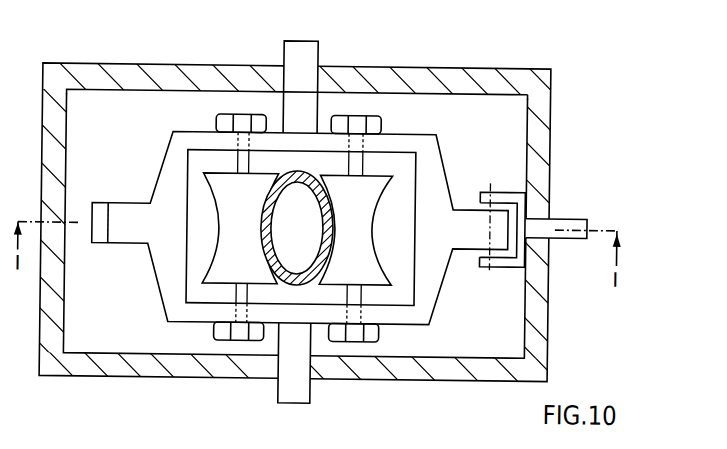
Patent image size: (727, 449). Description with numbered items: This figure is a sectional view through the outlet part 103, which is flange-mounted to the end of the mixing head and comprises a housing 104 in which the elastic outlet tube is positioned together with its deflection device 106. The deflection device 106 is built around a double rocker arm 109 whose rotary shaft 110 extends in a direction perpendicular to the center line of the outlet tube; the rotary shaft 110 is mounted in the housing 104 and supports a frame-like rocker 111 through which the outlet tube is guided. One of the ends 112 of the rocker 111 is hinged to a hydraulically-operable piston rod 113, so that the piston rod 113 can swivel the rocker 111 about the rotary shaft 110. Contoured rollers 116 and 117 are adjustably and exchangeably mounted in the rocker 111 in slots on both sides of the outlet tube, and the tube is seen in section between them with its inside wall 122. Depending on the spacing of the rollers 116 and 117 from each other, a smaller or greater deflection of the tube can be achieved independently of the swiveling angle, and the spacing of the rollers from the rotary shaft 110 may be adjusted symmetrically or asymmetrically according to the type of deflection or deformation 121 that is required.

The outlet part 103 is at (456, 62).
The housing 104 is at (411, 76).
The deflection device 106 is at (128, 116).
The double rocker arm 109 is at (184, 124).
The rotary shaft 110 is at (292, 58).
The rocker 111 is at (320, 318).
The end of the rocker 112 is at (471, 203).
The piston rod 113 is at (580, 219).
The contoured roller 116 is at (228, 273).
The contoured roller 117 is at (372, 282).
The deformation 121 is at (302, 229).
The inside wall 122 is at (318, 212).